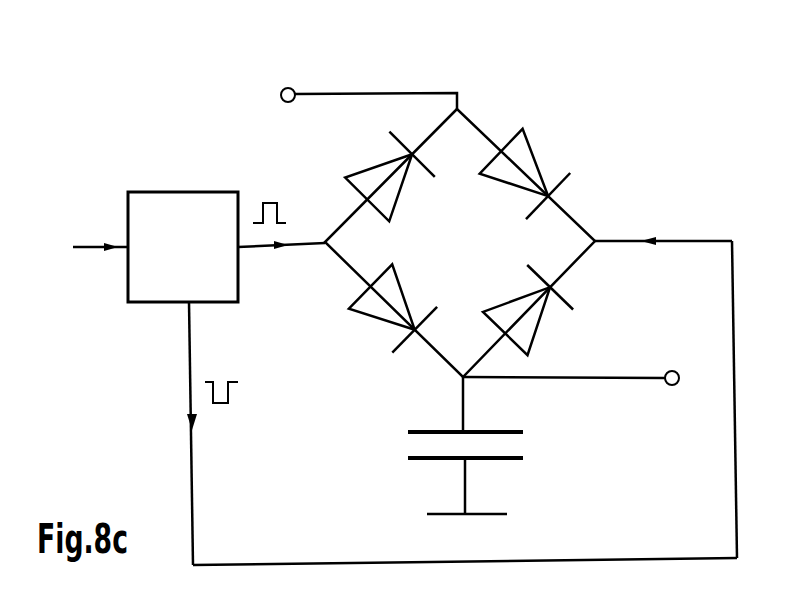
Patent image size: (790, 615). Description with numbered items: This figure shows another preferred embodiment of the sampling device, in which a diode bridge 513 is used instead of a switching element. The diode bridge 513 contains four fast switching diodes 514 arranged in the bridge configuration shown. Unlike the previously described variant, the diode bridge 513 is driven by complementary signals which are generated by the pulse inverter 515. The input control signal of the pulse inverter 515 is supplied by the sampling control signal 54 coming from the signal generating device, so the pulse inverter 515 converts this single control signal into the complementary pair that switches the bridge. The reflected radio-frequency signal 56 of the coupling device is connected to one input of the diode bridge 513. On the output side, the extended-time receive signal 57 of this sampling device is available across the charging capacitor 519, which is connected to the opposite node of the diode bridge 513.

The sampling control signal 54 is at (88, 240).
The pulse inverter 515 is at (174, 192).
The reflected radio-frequency signal 56 is at (365, 93).
The diode bridge 513 is at (515, 229).
The fast switching diodes 514 is at (483, 249).
The extended-time receive signal 57 is at (622, 372).
The charging capacitor 519 is at (512, 445).